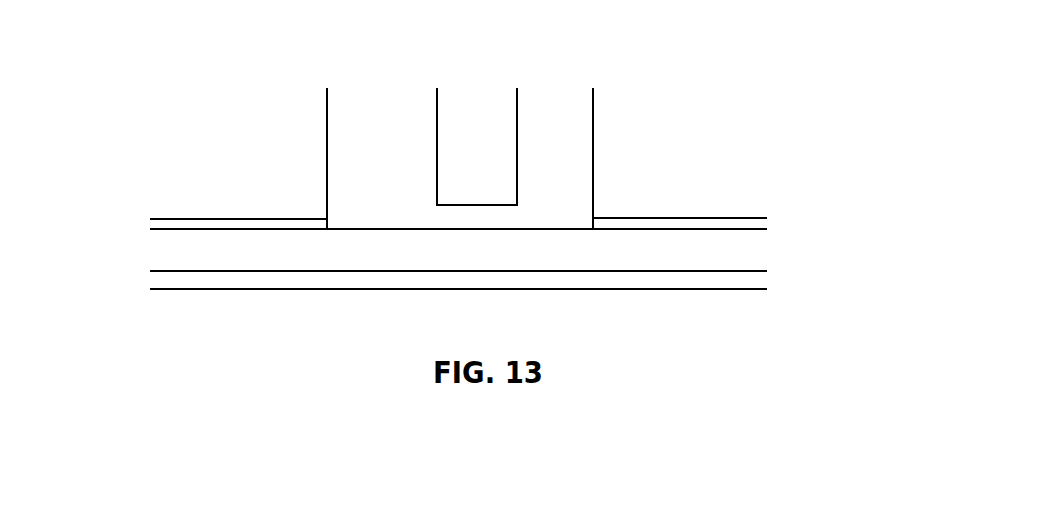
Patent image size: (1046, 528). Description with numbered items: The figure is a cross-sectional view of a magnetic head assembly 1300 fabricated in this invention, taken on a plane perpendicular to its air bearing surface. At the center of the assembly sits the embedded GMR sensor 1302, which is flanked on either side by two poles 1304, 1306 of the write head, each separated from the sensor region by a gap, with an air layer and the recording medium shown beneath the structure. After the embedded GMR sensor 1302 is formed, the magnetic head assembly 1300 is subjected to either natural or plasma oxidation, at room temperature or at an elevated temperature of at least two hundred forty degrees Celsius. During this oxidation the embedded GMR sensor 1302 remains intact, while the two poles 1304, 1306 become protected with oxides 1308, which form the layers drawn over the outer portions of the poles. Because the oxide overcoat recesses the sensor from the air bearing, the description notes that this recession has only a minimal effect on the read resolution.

The magnetic head assembly 1300 is at (206, 83).
The embedded GMR sensor 1302 is at (437, 101).
The pole 1304 is at (197, 170).
The pole 1306 is at (729, 160).
The oxides 1308 is at (173, 220).